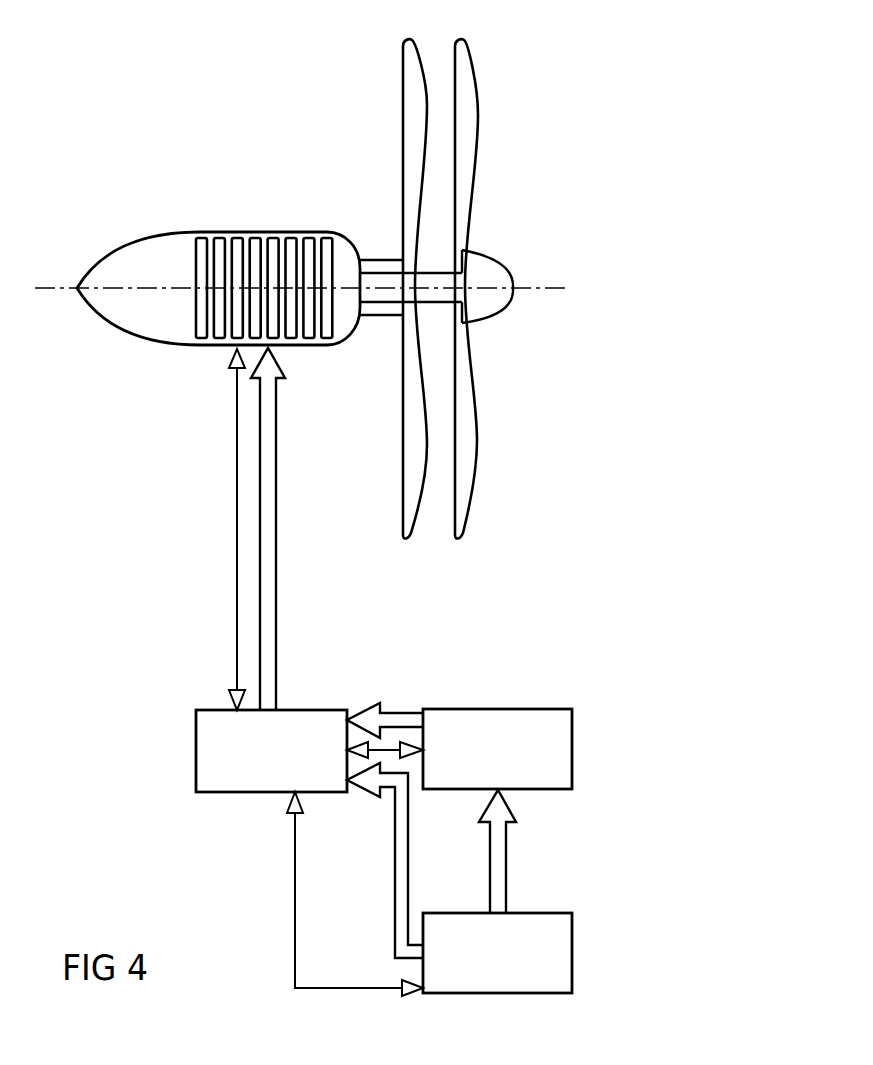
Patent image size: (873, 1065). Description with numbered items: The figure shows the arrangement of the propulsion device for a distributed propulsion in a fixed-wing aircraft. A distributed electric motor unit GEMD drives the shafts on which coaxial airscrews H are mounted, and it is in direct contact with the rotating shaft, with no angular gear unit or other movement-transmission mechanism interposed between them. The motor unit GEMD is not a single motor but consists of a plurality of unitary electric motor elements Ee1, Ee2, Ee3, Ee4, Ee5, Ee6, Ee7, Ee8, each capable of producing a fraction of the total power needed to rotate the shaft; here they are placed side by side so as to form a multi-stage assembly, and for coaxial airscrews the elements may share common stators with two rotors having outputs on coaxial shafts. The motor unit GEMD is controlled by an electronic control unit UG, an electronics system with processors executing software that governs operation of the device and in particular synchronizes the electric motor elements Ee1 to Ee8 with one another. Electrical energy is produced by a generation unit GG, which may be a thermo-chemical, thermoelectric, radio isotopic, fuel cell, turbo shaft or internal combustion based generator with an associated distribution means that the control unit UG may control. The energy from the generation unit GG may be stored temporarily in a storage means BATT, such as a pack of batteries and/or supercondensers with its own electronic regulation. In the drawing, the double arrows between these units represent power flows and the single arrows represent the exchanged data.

The distributed electric motor unit GEMD is at (143, 240).
The coaxial airscrews H is at (427, 117).
The electric motor element Ee1 is at (326, 238).
The electric motor element Ee2 is at (308, 345).
The electric motor element Ee3 is at (290, 239).
The electric motor element Ee4 is at (273, 350).
The electric motor element Ee5 is at (255, 239).
The electric motor element Ee6 is at (236, 343).
The electric motor element Ee7 is at (218, 237).
The electric motor element Ee8 is at (200, 346).
The electronic control unit UG is at (272, 790).
The storage means BATT is at (572, 745).
The electrical energy generation unit GG is at (572, 950).